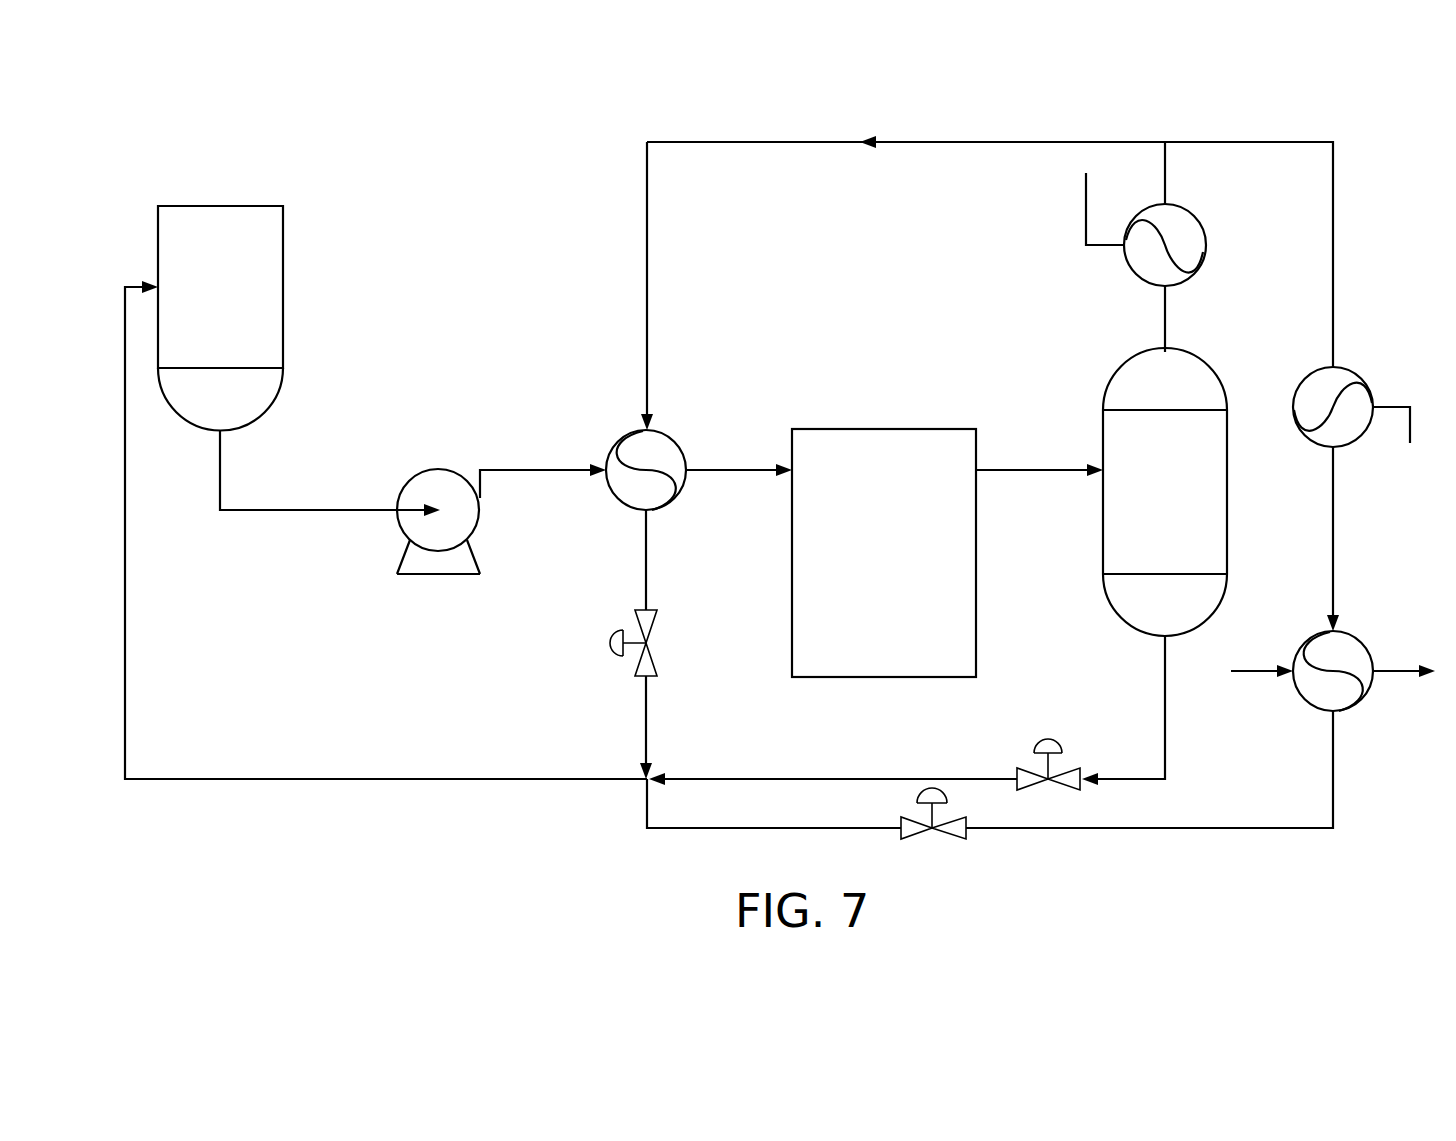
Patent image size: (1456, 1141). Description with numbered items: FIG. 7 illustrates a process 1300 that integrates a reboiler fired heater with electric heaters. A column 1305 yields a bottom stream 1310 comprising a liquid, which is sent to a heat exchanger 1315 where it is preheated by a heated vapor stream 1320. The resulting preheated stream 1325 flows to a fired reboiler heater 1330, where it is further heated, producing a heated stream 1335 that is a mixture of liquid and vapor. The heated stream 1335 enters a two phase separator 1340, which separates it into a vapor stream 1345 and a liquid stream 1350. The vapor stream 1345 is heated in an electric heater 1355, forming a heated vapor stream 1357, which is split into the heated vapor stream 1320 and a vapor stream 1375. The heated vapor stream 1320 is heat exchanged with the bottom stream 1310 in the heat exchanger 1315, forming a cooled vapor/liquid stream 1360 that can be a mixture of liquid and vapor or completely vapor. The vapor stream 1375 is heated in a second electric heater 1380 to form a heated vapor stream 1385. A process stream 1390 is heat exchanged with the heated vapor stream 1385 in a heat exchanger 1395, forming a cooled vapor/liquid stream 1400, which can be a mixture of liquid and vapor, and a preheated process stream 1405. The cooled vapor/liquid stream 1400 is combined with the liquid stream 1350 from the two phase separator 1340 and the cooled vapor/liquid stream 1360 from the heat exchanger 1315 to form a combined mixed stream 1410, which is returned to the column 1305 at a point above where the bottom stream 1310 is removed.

The process 1300 is at (478, 108).
The column 1305 is at (262, 206).
The bottom stream 1310 is at (345, 510).
The heat exchanger 1315 is at (628, 440).
The heated vapor stream 1320 is at (648, 325).
The preheated stream 1325 is at (740, 463).
The fired reboiler heater 1330 is at (884, 428).
The heated stream 1335 is at (1038, 467).
The two phase separator 1340 is at (1207, 367).
The vapor stream 1345 is at (1166, 303).
The liquid stream 1350 is at (1163, 707).
The electric heater 1355 is at (1203, 233).
The heated vapor stream 1357 is at (1166, 171).
The cooled vapor/liquid stream 1360 is at (648, 562).
The vapor stream 1375 is at (1278, 140).
The second electric heater 1380 is at (1360, 372).
The heated vapor stream 1385 is at (1332, 493).
The process stream 1390 is at (1265, 675).
The heat exchanger 1395 is at (1316, 642).
The cooled vapor/liquid stream 1400 is at (1243, 830).
The preheated process stream 1405 is at (1403, 675).
The combined mixed stream 1410 is at (508, 777).